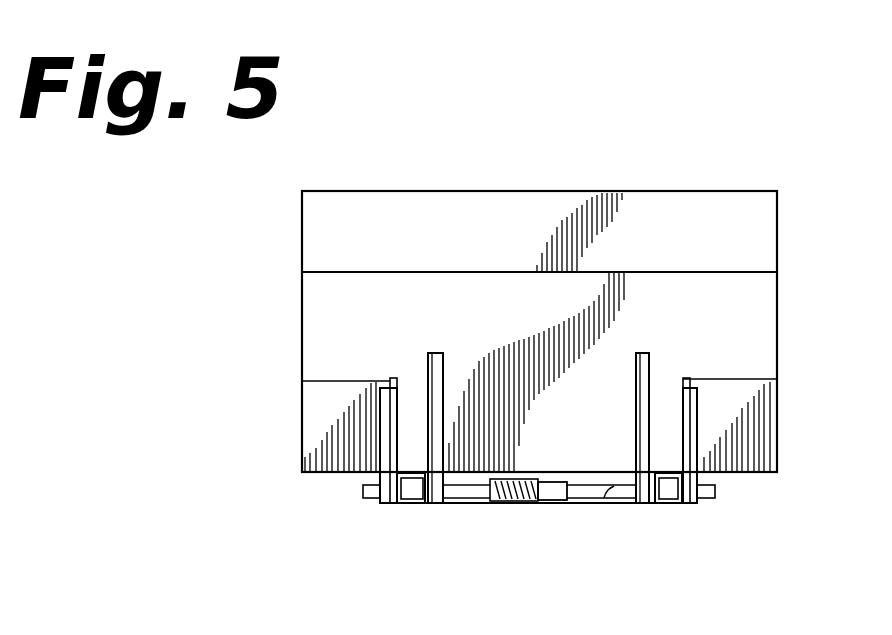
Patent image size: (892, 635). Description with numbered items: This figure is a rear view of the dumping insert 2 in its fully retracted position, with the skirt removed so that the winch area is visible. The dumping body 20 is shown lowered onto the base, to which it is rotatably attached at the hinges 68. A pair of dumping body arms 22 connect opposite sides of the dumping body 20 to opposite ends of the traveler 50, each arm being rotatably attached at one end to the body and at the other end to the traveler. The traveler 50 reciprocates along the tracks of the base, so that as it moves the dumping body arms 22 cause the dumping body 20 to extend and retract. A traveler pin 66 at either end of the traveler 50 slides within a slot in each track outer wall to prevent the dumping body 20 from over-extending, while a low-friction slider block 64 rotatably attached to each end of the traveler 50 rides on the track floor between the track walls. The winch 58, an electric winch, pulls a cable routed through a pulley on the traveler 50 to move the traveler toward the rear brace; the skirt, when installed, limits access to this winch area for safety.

The dumping insert 2 is at (663, 138).
The dumping body 20 is at (503, 221).
The dumping body arm 22 is at (392, 380).
The traveler 50 is at (484, 502).
The winch 58 is at (557, 500).
The slider block 64 is at (408, 494).
The traveler pin 66 is at (365, 490).
The hinge 68 is at (480, 490).